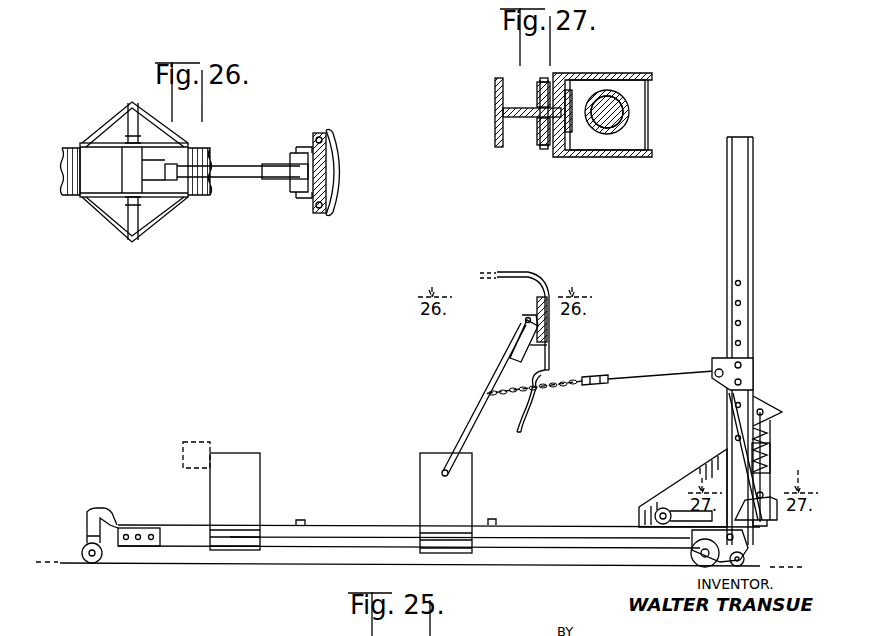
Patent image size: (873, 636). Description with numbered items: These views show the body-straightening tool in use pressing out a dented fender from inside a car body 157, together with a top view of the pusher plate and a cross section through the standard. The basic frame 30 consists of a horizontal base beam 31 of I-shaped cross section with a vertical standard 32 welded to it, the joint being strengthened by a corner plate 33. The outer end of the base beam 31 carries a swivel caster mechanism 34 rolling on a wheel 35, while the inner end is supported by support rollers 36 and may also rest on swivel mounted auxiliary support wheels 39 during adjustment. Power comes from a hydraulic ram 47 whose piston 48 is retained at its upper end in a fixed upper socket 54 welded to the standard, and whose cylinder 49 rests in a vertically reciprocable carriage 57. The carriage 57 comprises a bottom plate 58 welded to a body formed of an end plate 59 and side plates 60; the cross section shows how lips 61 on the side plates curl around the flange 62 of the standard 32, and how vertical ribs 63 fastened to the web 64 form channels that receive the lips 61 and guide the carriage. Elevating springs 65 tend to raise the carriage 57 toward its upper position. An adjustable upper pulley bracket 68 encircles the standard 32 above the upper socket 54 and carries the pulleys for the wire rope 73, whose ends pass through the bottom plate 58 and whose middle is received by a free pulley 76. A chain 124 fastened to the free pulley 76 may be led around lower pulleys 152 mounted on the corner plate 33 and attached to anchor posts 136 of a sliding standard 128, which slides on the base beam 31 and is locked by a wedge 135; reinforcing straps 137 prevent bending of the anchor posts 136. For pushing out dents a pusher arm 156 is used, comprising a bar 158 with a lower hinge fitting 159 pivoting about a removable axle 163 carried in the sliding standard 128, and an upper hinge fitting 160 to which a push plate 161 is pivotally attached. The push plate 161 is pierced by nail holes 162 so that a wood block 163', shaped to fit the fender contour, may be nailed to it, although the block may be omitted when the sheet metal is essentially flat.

In FIG. 25, the basic frame 30 is at (353, 522).
In FIG. 26, the base beam 31 is at (70, 178).
In FIG. 25, the base beam 31 is at (386, 526).
In FIG. 27, the vertical standard 32 is at (495, 115).
In FIG. 25, the vertical standard 32 is at (754, 176).
In FIG. 25, the corner plate 33 is at (690, 470).
In FIG. 25, the swivel caster mechanism 34 is at (104, 510).
In FIG. 25, the wheel 35 is at (80, 553).
In FIG. 25, the support roller 36 is at (692, 558).
In FIG. 25, the auxiliary support wheel 39 is at (748, 560).
In FIG. 25, the hydraulic ram 47 is at (777, 452).
In FIG. 27, the piston 48 is at (618, 97).
In FIG. 27, the cylinder 49 is at (596, 138).
In FIG. 25, the upper socket 54 is at (768, 398).
In FIG. 27, the carriage 57 is at (651, 68).
In FIG. 25, the carriage 57 is at (776, 472).
In FIG. 27, the bottom plate 58 is at (640, 90).
In FIG. 27, the end plate 59 is at (652, 130).
In FIG. 27, the side plates 60 is at (598, 74).
In FIG. 27, the lips 61 is at (540, 90).
In FIG. 27, the flange 62 is at (572, 95).
In FIG. 27, the vertical ribs 63 is at (540, 120).
In FIG. 27, the web 64 is at (510, 112).
In FIG. 25, the elevating springs 65 is at (776, 447).
In FIG. 25, the upper pulley bracket 68 is at (763, 372).
In FIG. 25, the wire rope 73 is at (666, 362).
In FIG. 25, the free pulley 76 is at (603, 378).
In FIG. 25, the chain 124 is at (553, 393).
In FIG. 26, the sliding standard 128 is at (166, 135).
In FIG. 25, the sliding standard 128 is at (266, 462).
In FIG. 25, the wedge 135 is at (304, 514).
In FIG. 26, the anchor post 136 is at (118, 122).
In FIG. 26, the reinforcing strap 137 is at (120, 100).
In FIG. 25, the lower pulley 152 is at (660, 510).
In FIG. 26, the pusher arm 156 is at (227, 178).
In FIG. 25, the pusher arm 156 is at (472, 407).
In FIG. 25, the car body 157 is at (530, 272).
In FIG. 26, the bar 158 is at (232, 175).
In FIG. 25, the bar 158 is at (496, 368).
In FIG. 26, the lower hinge fitting 159 is at (165, 172).
In FIG. 25, the lower hinge fitting 159 is at (446, 460).
In FIG. 26, the upper hinge fitting 160 is at (275, 182).
In FIG. 25, the upper hinge fitting 160 is at (516, 345).
In FIG. 26, the push plate 161 is at (314, 215).
In FIG. 25, the push plate 161 is at (537, 302).
In FIG. 26, the nail holes 162 is at (322, 146).
In FIG. 26, the removable axle 163 is at (107, 228).
In FIG. 26, the wood block 163' is at (356, 172).
In FIG. 25, the wood block 163' is at (567, 334).